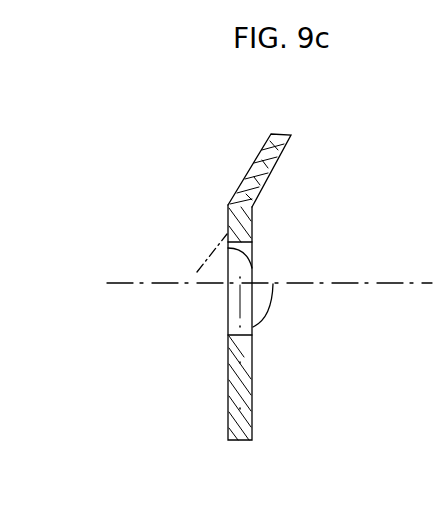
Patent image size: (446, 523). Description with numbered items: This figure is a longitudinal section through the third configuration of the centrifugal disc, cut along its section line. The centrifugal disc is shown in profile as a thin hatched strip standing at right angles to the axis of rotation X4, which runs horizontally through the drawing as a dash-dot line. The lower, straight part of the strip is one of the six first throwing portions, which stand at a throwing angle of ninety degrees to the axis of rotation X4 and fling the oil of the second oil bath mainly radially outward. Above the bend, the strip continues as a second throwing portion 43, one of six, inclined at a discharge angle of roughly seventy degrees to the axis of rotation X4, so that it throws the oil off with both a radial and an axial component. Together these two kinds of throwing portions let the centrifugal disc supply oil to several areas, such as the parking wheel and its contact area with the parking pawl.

The second throwing portion 43 is at (250, 163).
The axis of rotation X4 is at (246, 282).